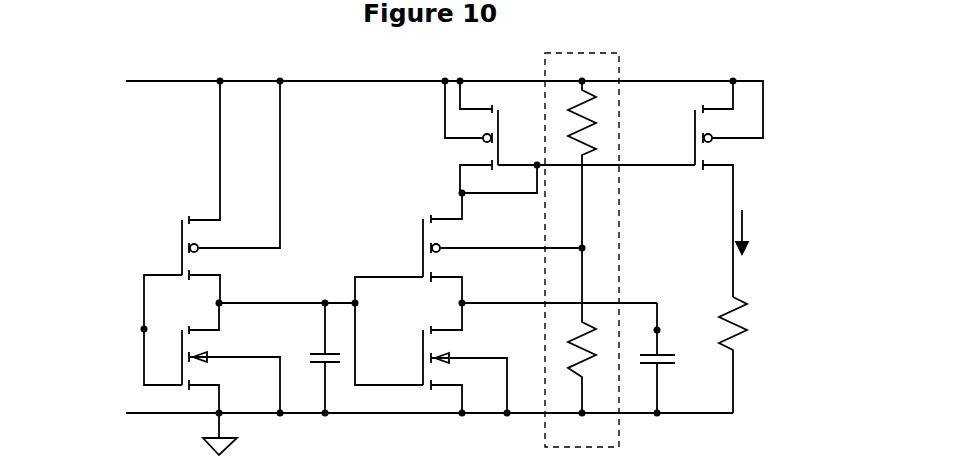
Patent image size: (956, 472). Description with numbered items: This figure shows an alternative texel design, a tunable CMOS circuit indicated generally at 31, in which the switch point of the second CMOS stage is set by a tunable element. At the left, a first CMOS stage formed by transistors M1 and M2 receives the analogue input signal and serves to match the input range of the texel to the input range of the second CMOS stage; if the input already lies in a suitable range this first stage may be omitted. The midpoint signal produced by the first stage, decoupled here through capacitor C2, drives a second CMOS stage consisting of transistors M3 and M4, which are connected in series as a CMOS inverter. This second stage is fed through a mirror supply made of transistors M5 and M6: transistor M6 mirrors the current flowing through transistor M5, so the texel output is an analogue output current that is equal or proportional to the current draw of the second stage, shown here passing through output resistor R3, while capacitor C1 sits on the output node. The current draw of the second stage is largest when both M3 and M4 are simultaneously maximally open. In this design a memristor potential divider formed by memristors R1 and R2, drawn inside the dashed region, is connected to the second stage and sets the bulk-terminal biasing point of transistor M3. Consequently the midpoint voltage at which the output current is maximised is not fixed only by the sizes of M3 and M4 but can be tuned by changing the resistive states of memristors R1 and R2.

The voltage regulator circuit 31 is at (134, 166).
The transistor M1 is at (231, 358).
The transistor M2 is at (231, 192).
The transistor M3 is at (502, 248).
The transistor M4 is at (465, 358).
The transistor M5 is at (462, 137).
The transistor M6 is at (743, 189).
The memristor R1 is at (595, 164).
The memristor R2 is at (596, 330).
The resistor R3 is at (746, 355).
The capacitor C1 is at (664, 358).
The capacitor C2 is at (316, 358).